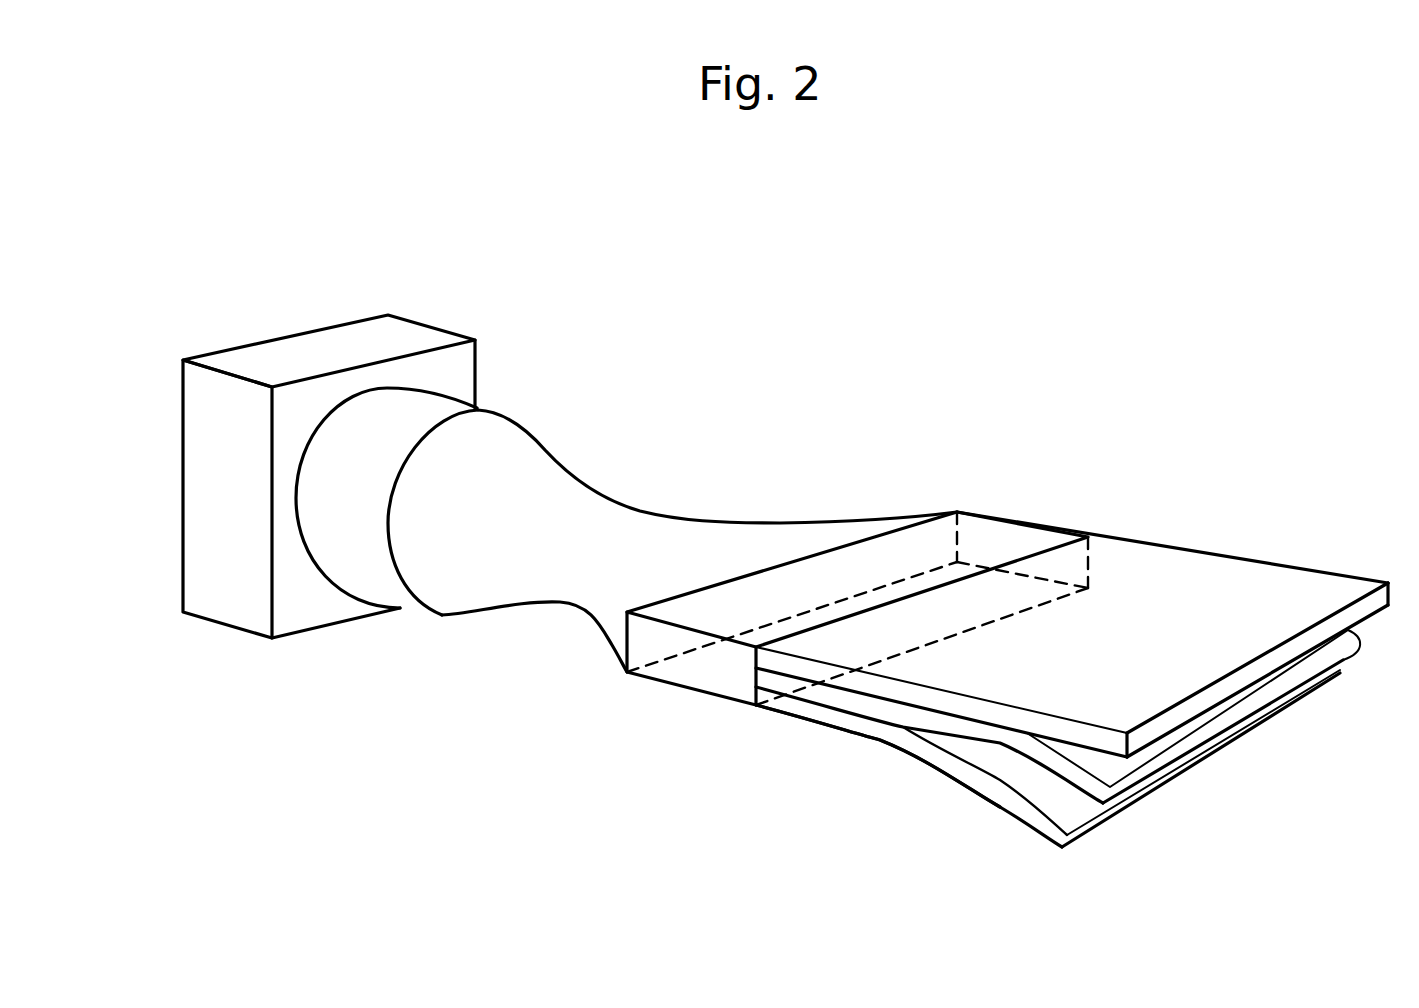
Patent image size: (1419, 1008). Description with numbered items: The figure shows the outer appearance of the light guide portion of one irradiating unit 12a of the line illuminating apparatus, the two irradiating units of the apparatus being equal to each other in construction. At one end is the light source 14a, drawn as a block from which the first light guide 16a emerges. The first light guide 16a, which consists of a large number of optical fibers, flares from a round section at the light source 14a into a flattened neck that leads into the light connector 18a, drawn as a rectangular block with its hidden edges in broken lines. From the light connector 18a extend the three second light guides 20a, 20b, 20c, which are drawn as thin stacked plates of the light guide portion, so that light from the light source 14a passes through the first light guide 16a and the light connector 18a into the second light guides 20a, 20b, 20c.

The irradiating unit 12a is at (892, 753).
The light source 14a is at (443, 328).
The first light guide 16a is at (573, 477).
The light connector 18a is at (995, 532).
The second light guide 20a is at (1313, 583).
The second light guide 20b is at (1128, 765).
The second light guide 20c is at (1038, 820).